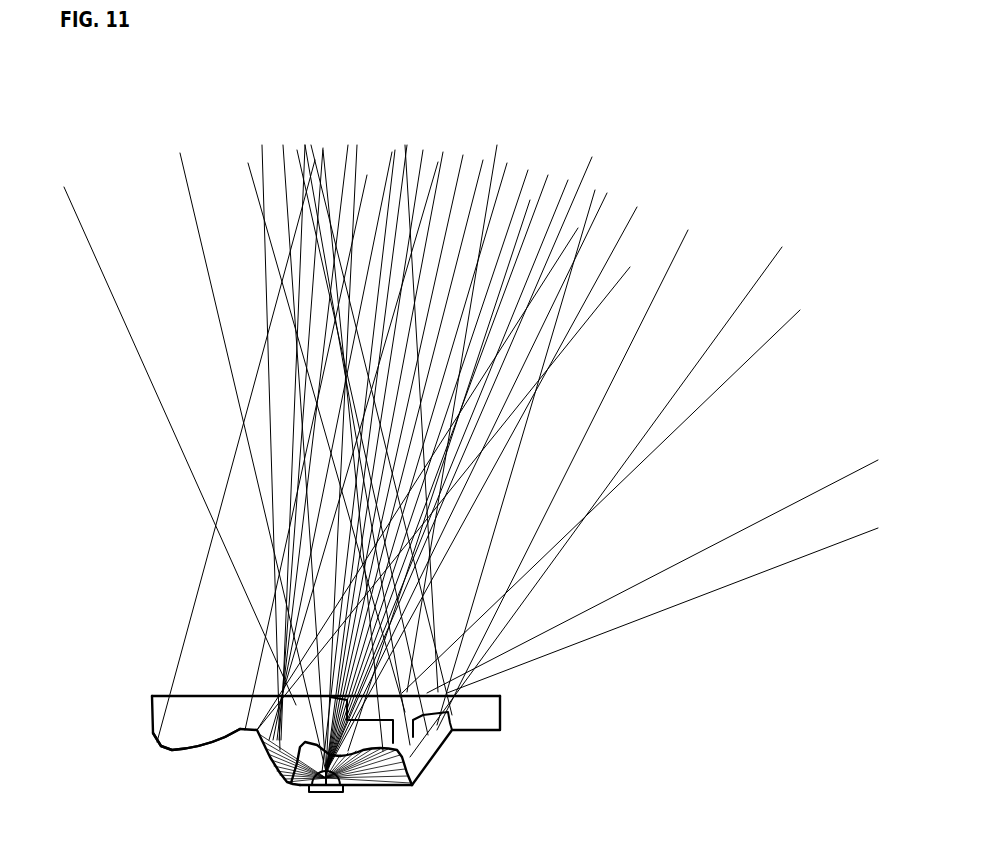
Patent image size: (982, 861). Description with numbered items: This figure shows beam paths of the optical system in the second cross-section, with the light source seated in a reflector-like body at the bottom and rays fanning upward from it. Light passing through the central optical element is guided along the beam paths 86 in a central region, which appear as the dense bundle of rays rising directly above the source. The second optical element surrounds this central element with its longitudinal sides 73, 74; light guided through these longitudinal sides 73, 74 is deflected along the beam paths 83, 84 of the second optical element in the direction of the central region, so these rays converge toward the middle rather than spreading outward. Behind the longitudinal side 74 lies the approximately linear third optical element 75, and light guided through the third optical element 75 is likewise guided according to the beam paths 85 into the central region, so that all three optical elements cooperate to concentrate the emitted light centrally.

The longitudinal side of second optical element 73 is at (416, 755).
The longitudinal side of second optical element 74 is at (278, 755).
The third optical element 75 is at (176, 736).
The beam path through the second optical element 83 is at (426, 695).
The beam path through the second optical element 84 is at (282, 691).
The beam path through the third optical element 85 is at (220, 665).
The beam path through the central optical element 86 is at (348, 700).